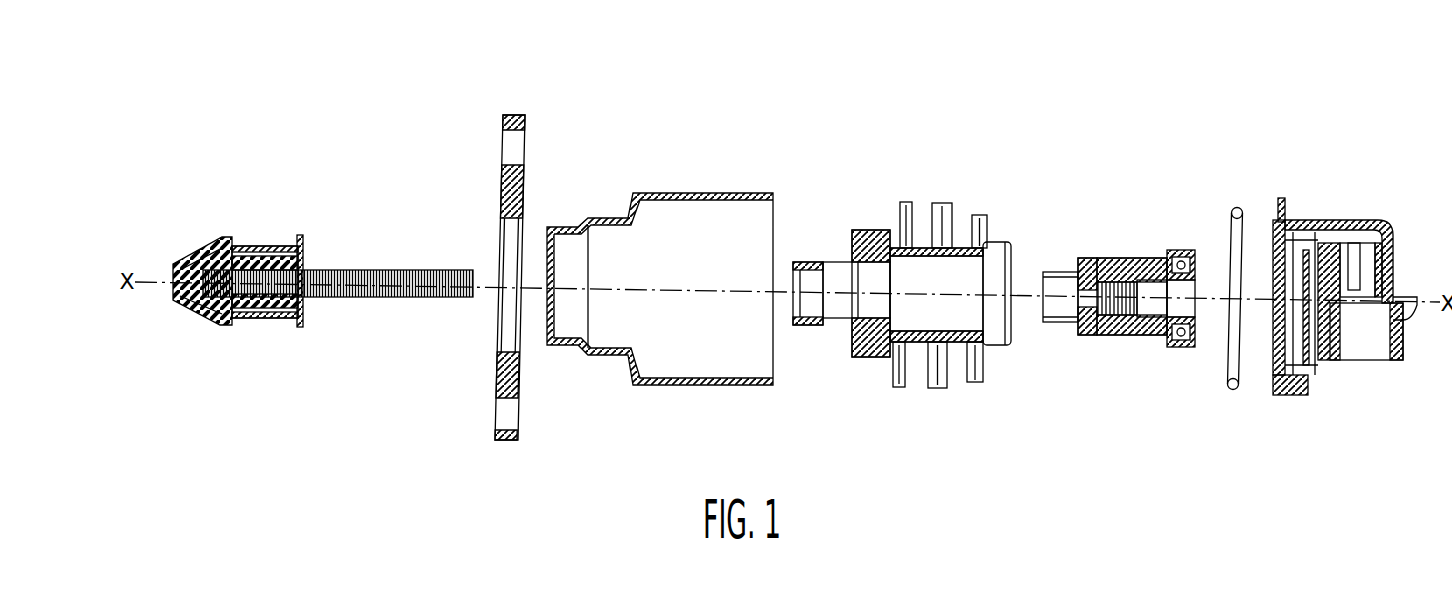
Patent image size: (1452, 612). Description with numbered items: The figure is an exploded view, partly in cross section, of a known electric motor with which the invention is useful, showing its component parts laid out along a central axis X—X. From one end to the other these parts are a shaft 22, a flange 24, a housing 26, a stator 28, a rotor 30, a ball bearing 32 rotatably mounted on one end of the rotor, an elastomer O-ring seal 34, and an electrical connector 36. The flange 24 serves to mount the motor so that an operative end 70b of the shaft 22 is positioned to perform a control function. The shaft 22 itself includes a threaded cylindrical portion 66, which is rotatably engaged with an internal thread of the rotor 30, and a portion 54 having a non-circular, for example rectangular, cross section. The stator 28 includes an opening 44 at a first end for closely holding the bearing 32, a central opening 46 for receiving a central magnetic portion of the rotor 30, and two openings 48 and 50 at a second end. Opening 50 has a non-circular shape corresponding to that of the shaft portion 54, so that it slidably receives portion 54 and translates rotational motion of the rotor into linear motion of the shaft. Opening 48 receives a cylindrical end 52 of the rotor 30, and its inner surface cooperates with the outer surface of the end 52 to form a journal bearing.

The shaft 22 is at (313, 230).
The flange 24 is at (518, 104).
The housing 26 is at (700, 179).
The stator 28 is at (917, 197).
The rotor 30 is at (1130, 338).
The ball bearing 32 is at (1177, 249).
The elastomer O-ring seal 34 is at (1230, 393).
The electrical connector 36 is at (1337, 213).
The opening 44 is at (1002, 330).
The central opening 46 is at (935, 318).
The opening 48 is at (882, 284).
The opening 50 is at (815, 278).
The cylindrical end 52 is at (1058, 272).
The non-circular shaped cross section portion 54 is at (262, 305).
The threaded cylindrical portion 66 is at (419, 298).
The operative end 70b is at (197, 318).